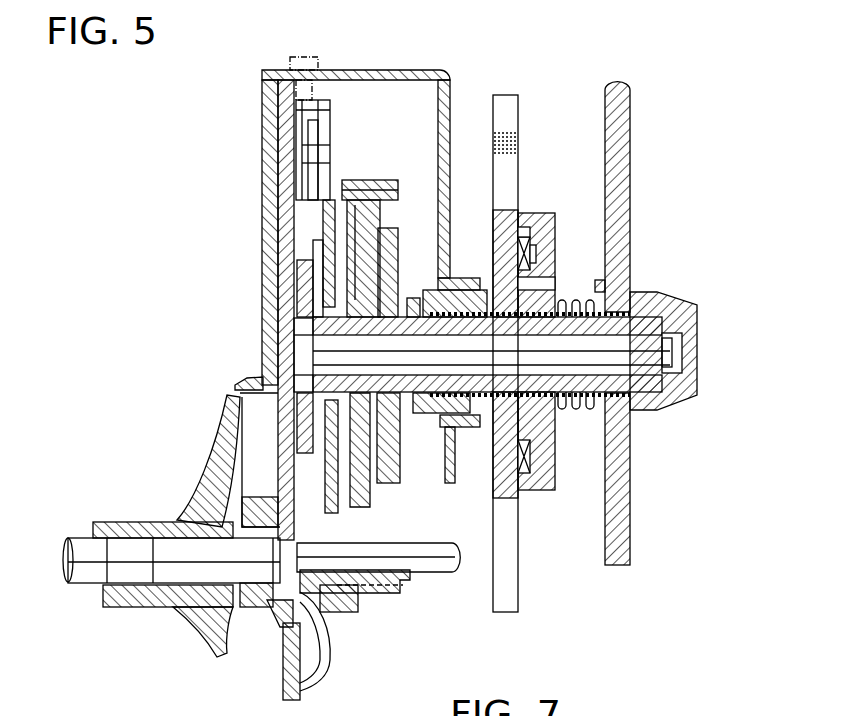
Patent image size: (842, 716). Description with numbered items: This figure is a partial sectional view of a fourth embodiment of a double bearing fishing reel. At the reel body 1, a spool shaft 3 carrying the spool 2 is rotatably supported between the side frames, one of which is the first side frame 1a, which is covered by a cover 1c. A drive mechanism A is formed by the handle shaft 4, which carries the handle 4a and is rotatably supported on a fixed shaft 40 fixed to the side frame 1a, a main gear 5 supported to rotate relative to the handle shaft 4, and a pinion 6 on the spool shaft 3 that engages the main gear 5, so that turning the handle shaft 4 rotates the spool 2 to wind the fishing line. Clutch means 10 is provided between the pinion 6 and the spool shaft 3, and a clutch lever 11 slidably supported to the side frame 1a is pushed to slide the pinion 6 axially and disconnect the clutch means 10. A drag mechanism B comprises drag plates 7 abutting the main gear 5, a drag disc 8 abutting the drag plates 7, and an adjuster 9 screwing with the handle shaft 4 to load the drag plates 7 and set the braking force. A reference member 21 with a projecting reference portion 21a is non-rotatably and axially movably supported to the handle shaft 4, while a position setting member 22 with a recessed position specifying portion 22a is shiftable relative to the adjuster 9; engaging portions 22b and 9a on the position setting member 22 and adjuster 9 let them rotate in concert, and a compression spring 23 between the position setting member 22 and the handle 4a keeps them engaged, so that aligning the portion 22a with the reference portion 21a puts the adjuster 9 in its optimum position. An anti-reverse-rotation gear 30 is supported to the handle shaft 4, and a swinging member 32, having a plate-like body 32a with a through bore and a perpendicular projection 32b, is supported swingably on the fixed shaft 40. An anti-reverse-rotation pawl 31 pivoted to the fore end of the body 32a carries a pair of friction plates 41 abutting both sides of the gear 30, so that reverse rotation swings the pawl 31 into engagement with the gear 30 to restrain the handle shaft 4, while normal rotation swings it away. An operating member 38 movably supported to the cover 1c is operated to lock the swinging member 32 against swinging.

The reel body 1 is at (278, 68).
The side frame 1a is at (280, 93).
The cover 1c is at (434, 66).
The operating member 38 is at (297, 54).
The projection 32b is at (313, 107).
The anti-reverse-rotation pawl 31 is at (327, 189).
The friction plates 41 is at (297, 208).
The swinging member 32 is at (327, 253).
The anti-reverse-rotation gear 30 is at (312, 255).
The plate-like body 32a is at (292, 297).
The main gear 5 is at (383, 180).
The drag plates 7 is at (383, 227).
The drag disc 8 is at (396, 235).
The drag mechanism B is at (396, 261).
The reference member 21 is at (496, 284).
The adjuster 9 is at (507, 208).
The position setting member 22 is at (540, 214).
The engaging portion 22b is at (530, 233).
The engaging portion 9a is at (532, 252).
The position specifying portion 22a is at (537, 283).
The reference portion 21a is at (603, 286).
The compression spring 23 is at (578, 395).
The handle 4a is at (630, 135).
The handle shaft 4 is at (660, 328).
The fixed shaft 40 is at (660, 357).
The drive mechanism A is at (303, 385).
The spool 2 is at (170, 523).
The spool shaft 3 is at (122, 546).
The clutch means 10 is at (275, 620).
The pinion 6 is at (388, 593).
The clutch lever 11 is at (330, 677).